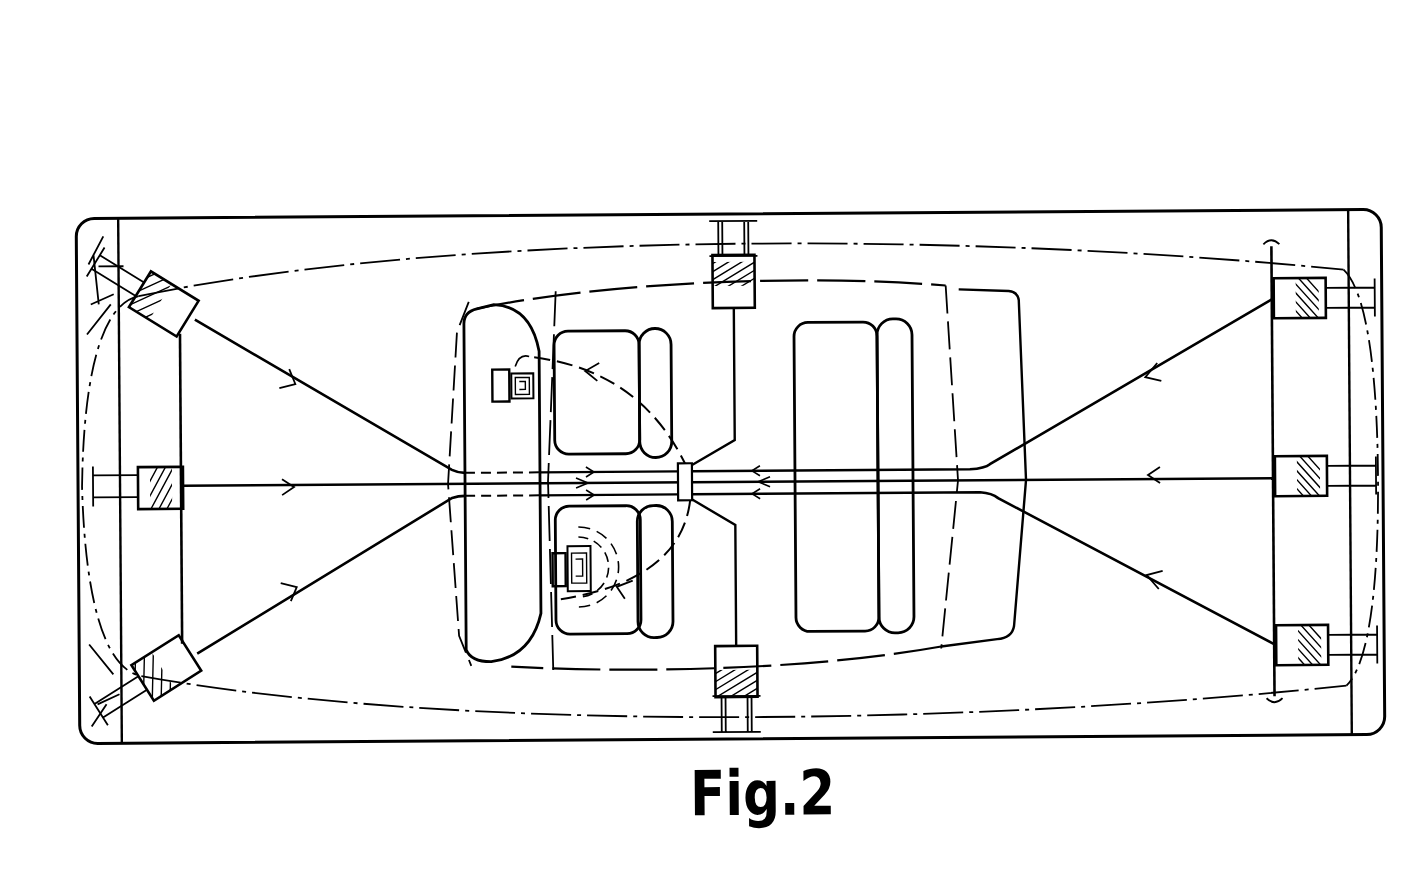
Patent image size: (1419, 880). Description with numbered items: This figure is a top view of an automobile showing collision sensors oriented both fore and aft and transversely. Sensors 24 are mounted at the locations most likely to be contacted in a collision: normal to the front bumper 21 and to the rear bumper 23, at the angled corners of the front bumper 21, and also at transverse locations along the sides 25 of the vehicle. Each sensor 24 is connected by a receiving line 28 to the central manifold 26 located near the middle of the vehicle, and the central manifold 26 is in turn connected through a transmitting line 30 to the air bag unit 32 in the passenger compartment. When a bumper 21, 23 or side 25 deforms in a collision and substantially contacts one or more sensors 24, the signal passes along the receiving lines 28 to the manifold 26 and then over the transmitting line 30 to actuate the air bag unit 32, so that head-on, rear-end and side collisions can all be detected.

The front bumper 21 is at (78, 345).
The rear bumper 23 is at (1385, 336).
The sensor 24 is at (214, 276).
The sides 25 is at (684, 214).
The central manifold 26 is at (690, 460).
The receiving lines 28 is at (300, 382).
The transmitting line 30 is at (624, 384).
The air bag unit 32 is at (499, 359).